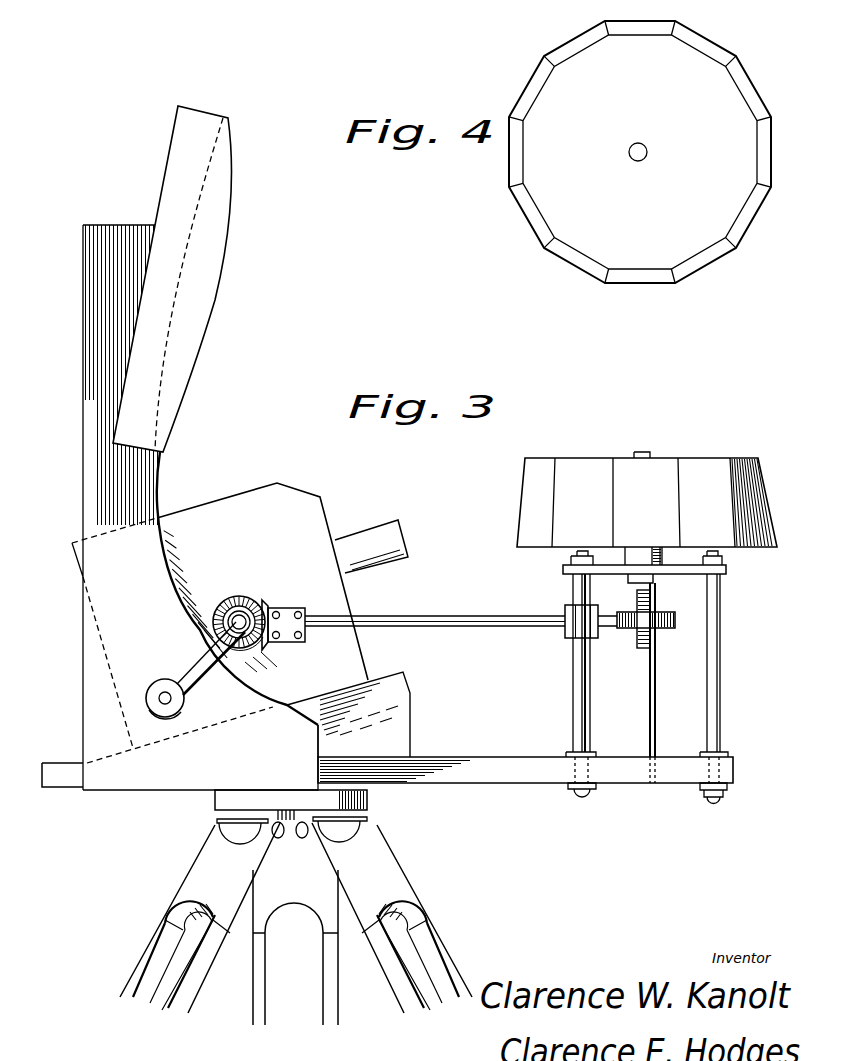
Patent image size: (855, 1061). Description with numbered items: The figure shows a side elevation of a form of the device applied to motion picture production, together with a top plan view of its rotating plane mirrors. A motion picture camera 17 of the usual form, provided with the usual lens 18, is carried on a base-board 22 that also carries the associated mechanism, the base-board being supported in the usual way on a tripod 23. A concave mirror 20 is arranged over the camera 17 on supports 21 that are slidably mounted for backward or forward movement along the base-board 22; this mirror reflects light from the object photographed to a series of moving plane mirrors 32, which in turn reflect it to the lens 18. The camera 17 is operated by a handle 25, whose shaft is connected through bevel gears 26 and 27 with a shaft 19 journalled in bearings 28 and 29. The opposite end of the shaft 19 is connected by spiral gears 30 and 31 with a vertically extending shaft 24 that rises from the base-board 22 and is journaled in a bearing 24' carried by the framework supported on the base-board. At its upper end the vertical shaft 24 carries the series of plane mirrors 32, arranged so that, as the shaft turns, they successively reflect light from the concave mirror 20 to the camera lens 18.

In FIG. 3, the camera 17 is at (241, 621).
In FIG. 3, the lens 18 is at (408, 555).
In FIG. 3, the shaft 19 is at (437, 616).
In FIG. 3, the concave mirror 20 is at (213, 246).
In FIG. 3, the supports 21 is at (88, 441).
In FIG. 3, the base-board 22 is at (62, 780).
In FIG. 3, the tripod 23 is at (208, 873).
In FIG. 3, the vertically extending shaft 24 is at (645, 677).
In FIG. 4, the vertically extending shaft 24 is at (657, 144).
In FIG. 3, the bearing 24' is at (693, 556).
In FIG. 3, the handle 25 is at (200, 657).
In FIG. 3, the bevel gear 26 is at (235, 596).
In FIG. 3, the bevel gear 27 is at (265, 604).
In FIG. 3, the bearing 28 is at (292, 607).
In FIG. 3, the bearing 29 is at (568, 608).
In FIG. 3, the spiral gear 30 is at (651, 646).
In FIG. 3, the spiral gear 31 is at (676, 628).
In FIG. 3, the plane mirrors 32 is at (582, 468).
In FIG. 4, the plane mirrors 32 is at (532, 80).